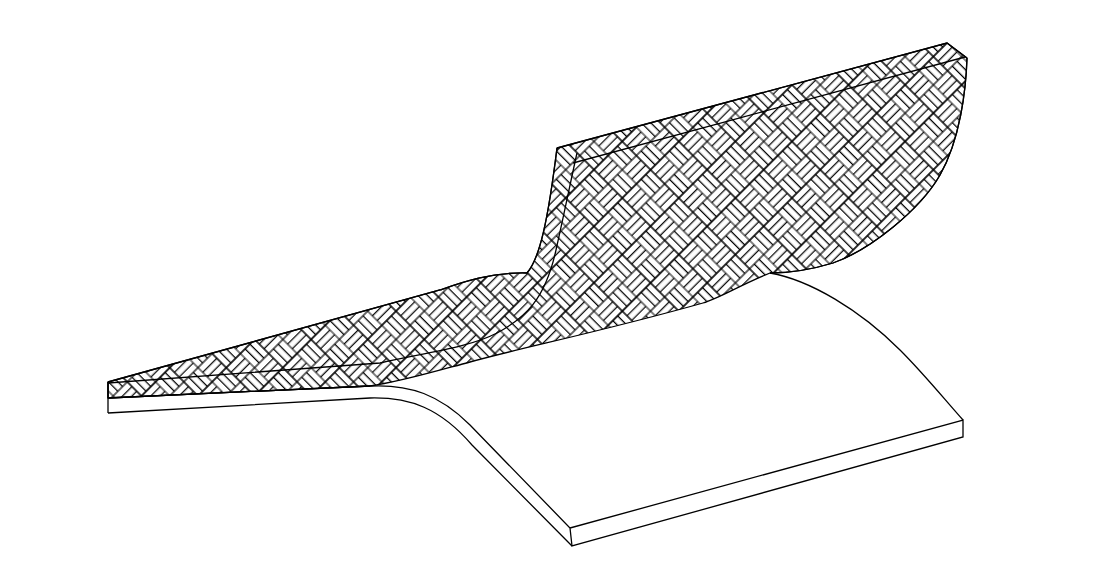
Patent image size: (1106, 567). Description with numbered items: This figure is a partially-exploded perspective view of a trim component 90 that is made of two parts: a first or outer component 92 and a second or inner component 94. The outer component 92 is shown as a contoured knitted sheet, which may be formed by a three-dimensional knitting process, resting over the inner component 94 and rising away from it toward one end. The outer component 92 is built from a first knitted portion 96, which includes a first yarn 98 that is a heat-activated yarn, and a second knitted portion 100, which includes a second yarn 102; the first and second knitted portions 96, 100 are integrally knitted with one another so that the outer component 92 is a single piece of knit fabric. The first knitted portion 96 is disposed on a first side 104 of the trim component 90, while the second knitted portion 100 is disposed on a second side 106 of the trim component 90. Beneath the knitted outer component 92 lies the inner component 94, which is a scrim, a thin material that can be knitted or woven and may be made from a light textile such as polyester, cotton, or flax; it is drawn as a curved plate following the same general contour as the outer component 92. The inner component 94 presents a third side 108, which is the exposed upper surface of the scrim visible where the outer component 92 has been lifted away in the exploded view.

The trim component 90 is at (290, 150).
The first or outer component 92 is at (137, 389).
The second or inner component 94 is at (893, 380).
The first knitted portion 96 is at (460, 300).
The first yarn 98 is at (255, 352).
The second knitted portion 100 is at (936, 160).
The second yarn 102 is at (957, 87).
The first side 104 is at (370, 320).
The second side 106 is at (906, 211).
The third side 108 is at (776, 333).